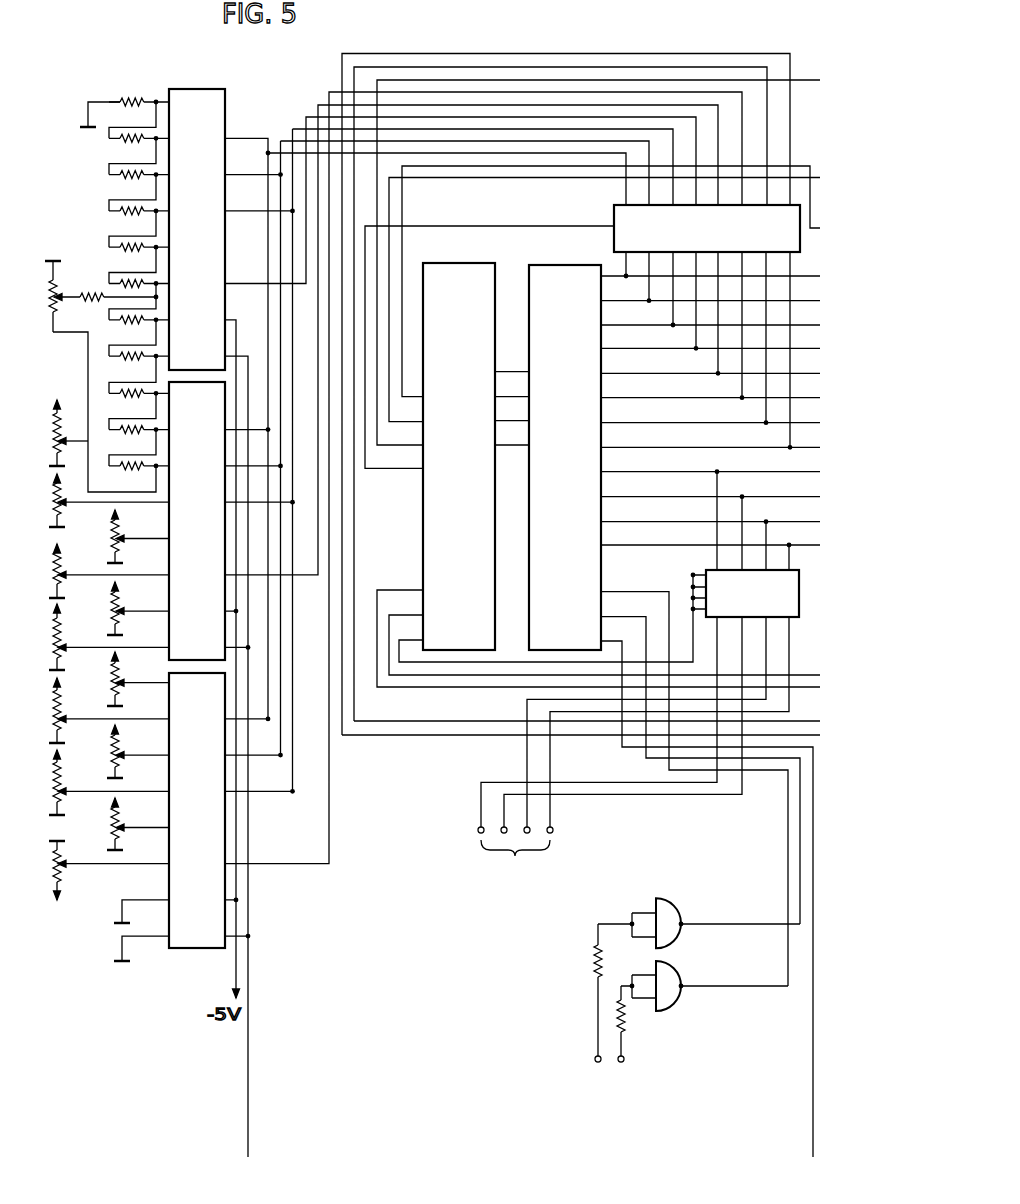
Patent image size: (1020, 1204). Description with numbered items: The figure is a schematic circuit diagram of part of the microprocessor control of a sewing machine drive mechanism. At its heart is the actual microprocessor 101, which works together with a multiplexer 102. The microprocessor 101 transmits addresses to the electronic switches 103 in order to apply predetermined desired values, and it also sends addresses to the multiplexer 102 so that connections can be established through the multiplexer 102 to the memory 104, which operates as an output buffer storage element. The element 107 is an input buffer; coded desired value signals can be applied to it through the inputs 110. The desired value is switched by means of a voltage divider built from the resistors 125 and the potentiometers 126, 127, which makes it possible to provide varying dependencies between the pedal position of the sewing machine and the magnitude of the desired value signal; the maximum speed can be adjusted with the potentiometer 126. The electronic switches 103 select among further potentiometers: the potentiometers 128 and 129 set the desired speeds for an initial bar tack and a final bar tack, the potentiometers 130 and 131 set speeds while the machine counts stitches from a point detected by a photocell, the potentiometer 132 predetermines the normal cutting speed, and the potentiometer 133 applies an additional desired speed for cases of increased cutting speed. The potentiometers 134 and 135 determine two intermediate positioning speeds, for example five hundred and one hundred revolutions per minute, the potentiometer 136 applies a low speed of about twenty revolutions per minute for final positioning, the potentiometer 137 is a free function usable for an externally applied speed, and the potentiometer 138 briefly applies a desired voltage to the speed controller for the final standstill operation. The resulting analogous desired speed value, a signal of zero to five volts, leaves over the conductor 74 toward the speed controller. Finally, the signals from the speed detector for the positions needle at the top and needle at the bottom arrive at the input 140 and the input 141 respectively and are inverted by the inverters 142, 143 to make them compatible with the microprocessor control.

The conductor 74 is at (248, 1091).
The microprocessor 101 is at (552, 277).
The multiplexer 102 is at (428, 503).
The electronic switches 103 is at (226, 105).
The memory 104 is at (614, 222).
The input buffer 107 is at (710, 577).
The inputs 110 is at (515, 856).
The resistors 125 is at (120, 138).
The potentiometer 126 is at (55, 432).
The potentiometer 127 is at (57, 283).
The potentiometer 128 is at (59, 512).
The potentiometer 129 is at (118, 545).
The potentiometer 130 is at (58, 580).
The potentiometer 131 is at (118, 619).
The potentiometer 132 is at (118, 691).
The potentiometer 133 is at (58, 650).
The potentiometer 134 is at (58, 720).
The potentiometer 135 is at (118, 765).
The potentiometer 136 is at (58, 795).
The potentiometer 137 is at (118, 834).
The potentiometer 138 is at (58, 862).
The input 140 is at (594, 1061).
The input 141 is at (623, 1062).
The inverter 142 is at (667, 912).
The inverter 143 is at (667, 997).